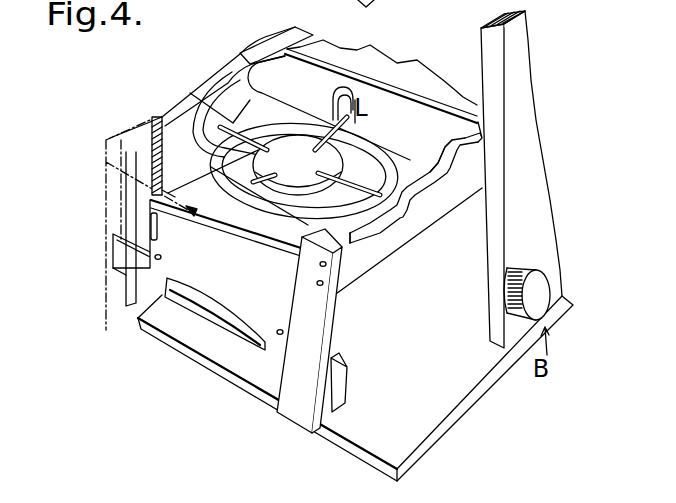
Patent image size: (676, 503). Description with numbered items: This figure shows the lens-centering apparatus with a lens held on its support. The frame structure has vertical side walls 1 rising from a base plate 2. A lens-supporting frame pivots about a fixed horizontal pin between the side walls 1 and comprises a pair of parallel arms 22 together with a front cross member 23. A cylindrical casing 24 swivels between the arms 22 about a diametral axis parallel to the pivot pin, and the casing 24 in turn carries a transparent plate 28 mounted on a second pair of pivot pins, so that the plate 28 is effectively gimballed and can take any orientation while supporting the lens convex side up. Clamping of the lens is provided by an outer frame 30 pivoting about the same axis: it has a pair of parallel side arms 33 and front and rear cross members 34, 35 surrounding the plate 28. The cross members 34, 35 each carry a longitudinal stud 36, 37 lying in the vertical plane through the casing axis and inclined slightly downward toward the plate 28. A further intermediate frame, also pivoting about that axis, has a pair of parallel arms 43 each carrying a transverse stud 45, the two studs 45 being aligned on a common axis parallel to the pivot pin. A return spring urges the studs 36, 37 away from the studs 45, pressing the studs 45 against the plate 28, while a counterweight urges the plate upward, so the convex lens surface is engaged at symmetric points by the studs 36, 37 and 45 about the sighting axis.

The vertical side wall 1 is at (523, 163).
The base plate 2 is at (468, 373).
The parallel arms 22 is at (188, 209).
The front cross member 23 is at (150, 272).
The cylindrical casing 24 is at (378, 180).
The transparent element (plate) 28 is at (357, 167).
The outer frame 30 is at (355, 305).
The side arms 33 is at (183, 110).
The front cross member 34 is at (287, 240).
The rear cross member 35 is at (377, 98).
The longitudinal stud 36 is at (266, 205).
The longitudinal stud 37 is at (330, 120).
The parallel arms 43 is at (228, 120).
The transverse stud 45 is at (273, 166).